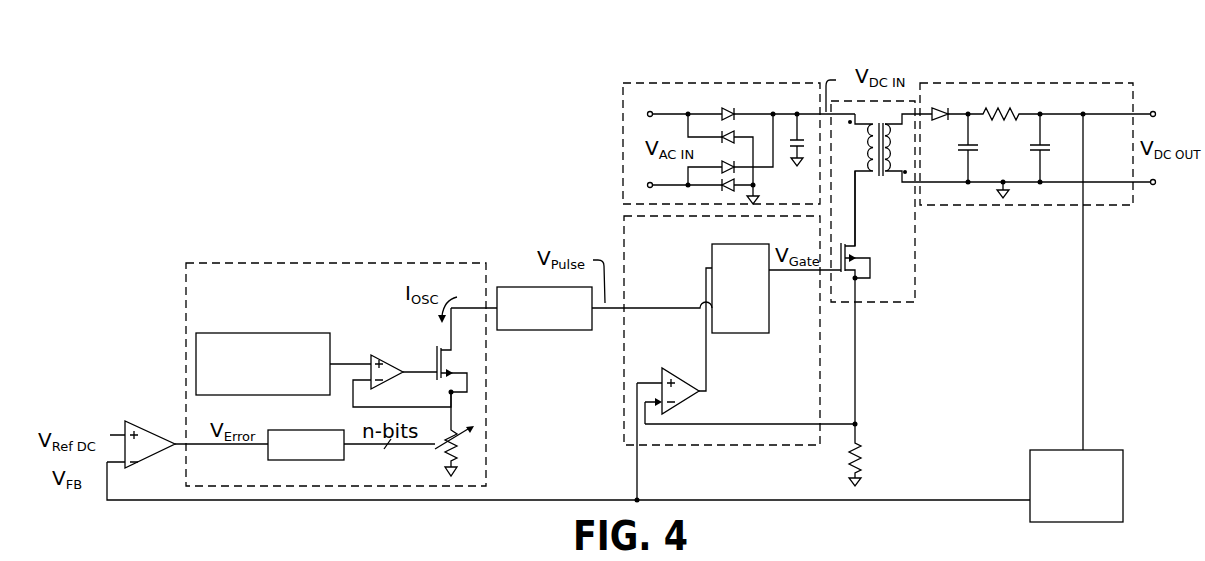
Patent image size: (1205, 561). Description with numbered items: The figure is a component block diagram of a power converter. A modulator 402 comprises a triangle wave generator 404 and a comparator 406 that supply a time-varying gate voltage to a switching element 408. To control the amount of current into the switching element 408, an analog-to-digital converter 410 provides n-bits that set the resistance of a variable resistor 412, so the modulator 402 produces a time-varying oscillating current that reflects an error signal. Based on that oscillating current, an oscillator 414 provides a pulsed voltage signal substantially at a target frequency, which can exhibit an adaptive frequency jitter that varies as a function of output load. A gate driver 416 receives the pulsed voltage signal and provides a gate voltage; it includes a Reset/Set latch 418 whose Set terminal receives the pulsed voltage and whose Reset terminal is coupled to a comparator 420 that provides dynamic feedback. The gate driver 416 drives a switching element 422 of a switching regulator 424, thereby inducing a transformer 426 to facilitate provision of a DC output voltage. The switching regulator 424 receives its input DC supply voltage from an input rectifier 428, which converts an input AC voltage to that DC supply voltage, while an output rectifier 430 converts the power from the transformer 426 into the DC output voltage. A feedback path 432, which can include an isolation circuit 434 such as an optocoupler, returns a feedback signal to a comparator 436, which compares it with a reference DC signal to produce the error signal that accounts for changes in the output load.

The modulator 402 is at (337, 263).
The triangle wave generator 404 is at (263, 333).
The comparator 406 is at (391, 356).
The switching element 408 is at (480, 372).
The analog-to-digital converter 410 is at (314, 430).
The variable resistor 412 is at (480, 449).
The oscillator 414 is at (543, 330).
The gate driver 416 is at (722, 446).
The Reset/Set latch 418 is at (742, 334).
The comparator 420 is at (688, 397).
The switching element 422 is at (889, 277).
The switching regulator 424 is at (874, 303).
The transformer 426 is at (889, 196).
The input rectifier 428 is at (620, 150).
The output rectifier 430 is at (1010, 206).
The feedback path 432 is at (1085, 318).
The isolation circuit 434 is at (1124, 486).
The comparator 436 is at (153, 421).